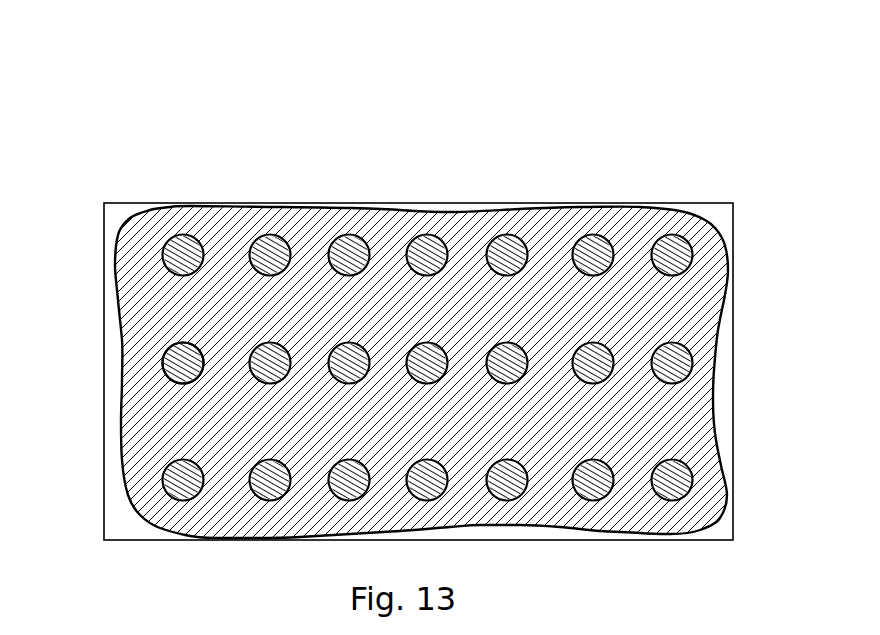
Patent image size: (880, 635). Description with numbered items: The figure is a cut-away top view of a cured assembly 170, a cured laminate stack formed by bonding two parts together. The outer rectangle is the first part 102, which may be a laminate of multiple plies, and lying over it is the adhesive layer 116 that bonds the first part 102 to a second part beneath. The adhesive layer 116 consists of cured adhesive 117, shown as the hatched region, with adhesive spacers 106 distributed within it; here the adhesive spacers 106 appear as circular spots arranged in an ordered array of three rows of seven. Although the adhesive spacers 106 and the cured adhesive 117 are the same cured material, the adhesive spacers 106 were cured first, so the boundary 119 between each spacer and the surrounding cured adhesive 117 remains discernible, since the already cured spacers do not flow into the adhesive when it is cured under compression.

The cured assembly 170 is at (182, 95).
The first part 102 is at (137, 213).
The adhesive spacers 106 is at (664, 253).
The adhesive layer 116 is at (650, 302).
The cured adhesive 117 is at (180, 292).
The boundary 119 is at (165, 350).